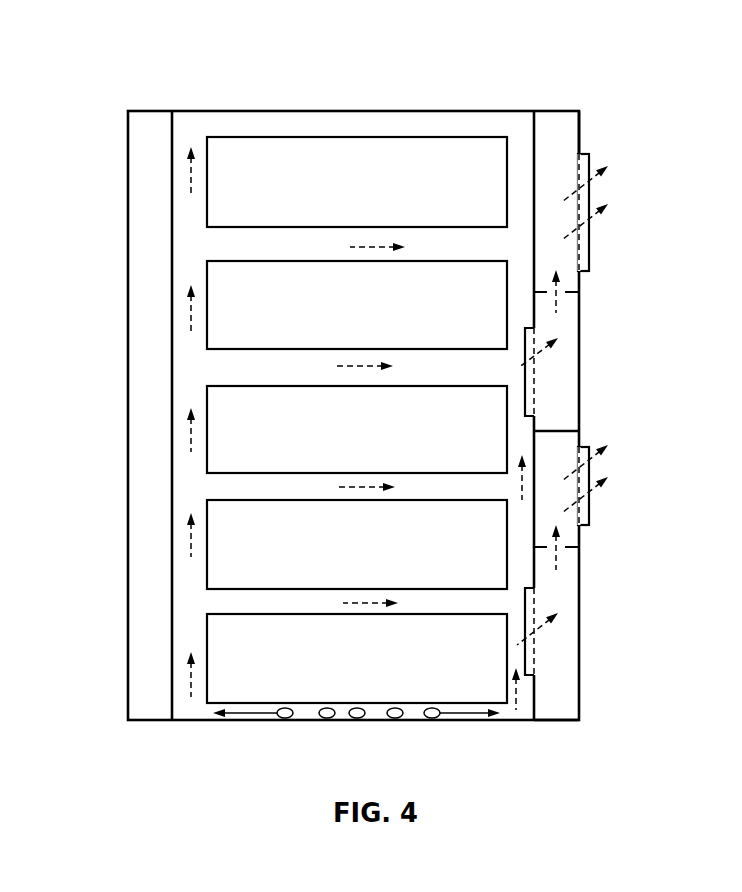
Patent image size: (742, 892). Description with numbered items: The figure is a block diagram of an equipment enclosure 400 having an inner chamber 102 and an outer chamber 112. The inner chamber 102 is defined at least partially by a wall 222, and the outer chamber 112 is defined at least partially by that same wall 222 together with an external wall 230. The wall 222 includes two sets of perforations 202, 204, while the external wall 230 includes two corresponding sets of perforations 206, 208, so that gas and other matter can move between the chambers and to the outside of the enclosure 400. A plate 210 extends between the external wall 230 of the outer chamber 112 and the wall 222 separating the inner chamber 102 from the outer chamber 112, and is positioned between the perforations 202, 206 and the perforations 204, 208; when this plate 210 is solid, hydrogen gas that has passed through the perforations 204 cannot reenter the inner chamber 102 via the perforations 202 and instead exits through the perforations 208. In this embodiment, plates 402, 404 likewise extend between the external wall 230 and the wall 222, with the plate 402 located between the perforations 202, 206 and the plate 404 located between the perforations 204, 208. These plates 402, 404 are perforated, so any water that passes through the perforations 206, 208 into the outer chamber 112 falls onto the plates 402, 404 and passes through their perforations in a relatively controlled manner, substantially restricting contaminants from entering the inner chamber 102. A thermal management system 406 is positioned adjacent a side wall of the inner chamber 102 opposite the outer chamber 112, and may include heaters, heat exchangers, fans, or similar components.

The equipment enclosure 400 is at (161, 74).
The inner chamber 102 is at (280, 123).
The outer chamber 112 is at (552, 125).
The external wall 230 is at (580, 125).
The perforations 206 is at (571, 242).
The plate 402 is at (577, 295).
The perforations 202 is at (533, 380).
The plate 210 is at (562, 430).
The perforations 208 is at (573, 456).
The plate 404 is at (577, 549).
The perforations 204 is at (533, 601).
The wall 222 is at (535, 692).
The thermal management system 406 is at (138, 328).